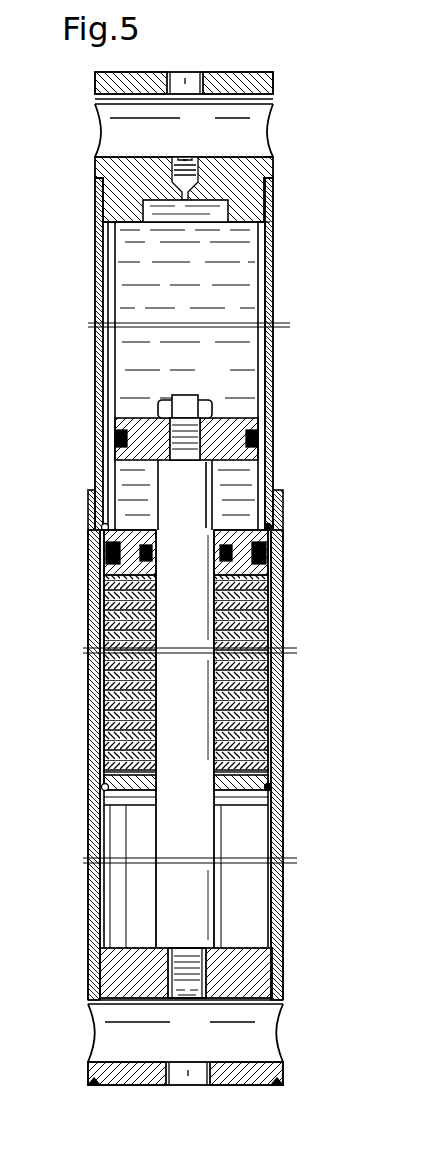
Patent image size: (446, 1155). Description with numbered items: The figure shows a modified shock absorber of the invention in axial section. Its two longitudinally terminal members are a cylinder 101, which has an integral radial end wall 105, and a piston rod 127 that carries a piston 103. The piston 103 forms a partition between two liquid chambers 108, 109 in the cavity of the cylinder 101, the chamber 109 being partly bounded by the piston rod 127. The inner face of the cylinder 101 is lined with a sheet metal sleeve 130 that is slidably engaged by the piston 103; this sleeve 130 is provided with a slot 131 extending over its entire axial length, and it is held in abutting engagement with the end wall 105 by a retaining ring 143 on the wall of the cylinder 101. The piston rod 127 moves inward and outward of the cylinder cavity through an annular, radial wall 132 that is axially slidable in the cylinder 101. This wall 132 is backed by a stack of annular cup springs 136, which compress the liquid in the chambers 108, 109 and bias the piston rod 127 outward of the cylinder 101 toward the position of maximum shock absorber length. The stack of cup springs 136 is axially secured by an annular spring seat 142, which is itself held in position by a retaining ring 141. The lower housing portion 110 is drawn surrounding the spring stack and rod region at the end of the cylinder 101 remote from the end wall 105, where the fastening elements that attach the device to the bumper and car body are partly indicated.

The cylinder 101 is at (276, 262).
The piston 103 is at (228, 418).
The radial end wall 105 is at (103, 173).
The chamber 108 is at (130, 296).
The chamber 109 is at (258, 488).
The lower housing 110 is at (118, 914).
The piston rod 127 is at (200, 902).
The sheet metal sleeve 130 is at (265, 392).
The slot 131 is at (106, 368).
The annular radial wall 132 is at (101, 527).
The annular cup springs 136 is at (266, 614).
The retaining ring 141 is at (270, 790).
The annular spring seat 142 is at (126, 798).
The retaining ring 143 is at (276, 530).